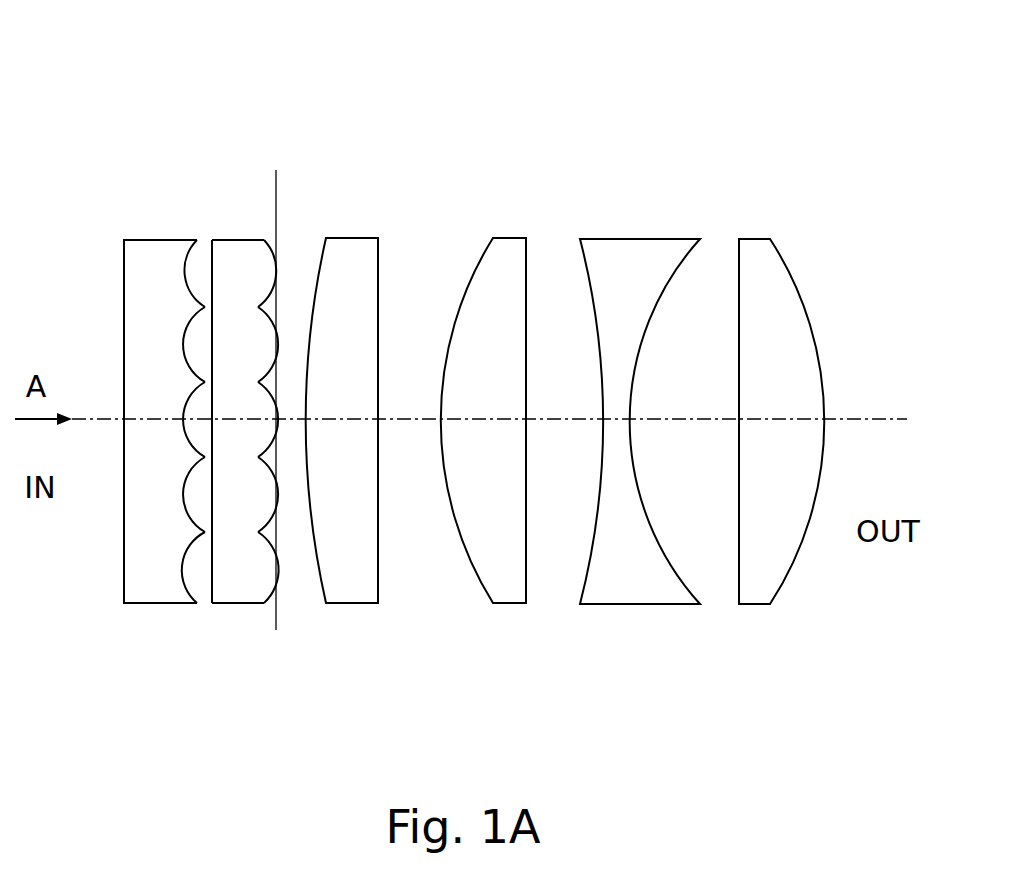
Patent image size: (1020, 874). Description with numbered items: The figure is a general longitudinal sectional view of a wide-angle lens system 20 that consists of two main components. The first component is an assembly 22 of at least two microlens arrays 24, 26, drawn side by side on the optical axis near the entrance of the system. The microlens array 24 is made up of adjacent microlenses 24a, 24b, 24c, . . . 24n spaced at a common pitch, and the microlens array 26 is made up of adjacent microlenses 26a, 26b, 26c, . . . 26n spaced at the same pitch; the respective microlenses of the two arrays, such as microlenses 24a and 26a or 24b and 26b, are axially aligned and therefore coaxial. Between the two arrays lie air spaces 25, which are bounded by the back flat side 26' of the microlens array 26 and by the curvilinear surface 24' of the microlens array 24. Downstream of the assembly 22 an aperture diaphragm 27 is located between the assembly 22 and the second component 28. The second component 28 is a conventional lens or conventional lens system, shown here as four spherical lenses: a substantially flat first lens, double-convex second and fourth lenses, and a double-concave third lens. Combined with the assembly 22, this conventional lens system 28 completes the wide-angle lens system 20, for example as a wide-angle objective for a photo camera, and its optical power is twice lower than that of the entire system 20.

The wide-angle lens system 20 is at (476, 121).
The assembly of microlens arrays 22 is at (228, 202).
The microlens array 24 is at (113, 387).
The microlens 24a is at (183, 267).
The microlens 24b is at (183, 340).
The microlens 24c is at (183, 418).
The curvilinear surface of microlens array 24' is at (113, 518).
The microlens 24n is at (185, 563).
The air spaces 25 is at (194, 573).
The microlens array 26 is at (272, 414).
The back flat side of microlens array 26' is at (213, 360).
The microlens 26a is at (277, 272).
The microlens 26b is at (276, 350).
The microlens 26c is at (278, 425).
The microlens 26n is at (278, 567).
The aperture diaphragm 27 is at (277, 195).
The conventional lens system 28 is at (608, 181).